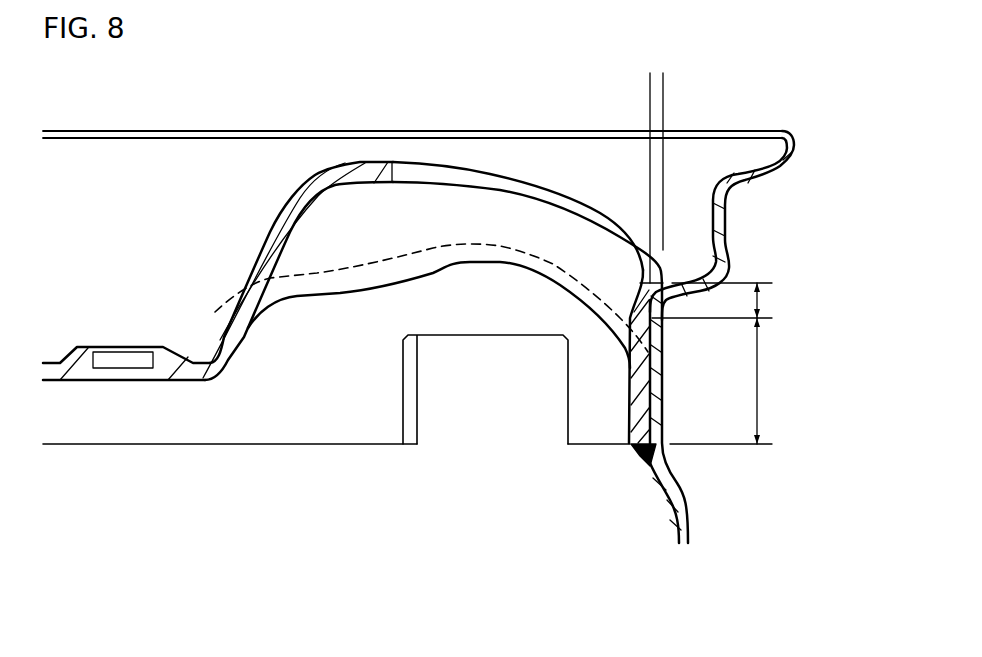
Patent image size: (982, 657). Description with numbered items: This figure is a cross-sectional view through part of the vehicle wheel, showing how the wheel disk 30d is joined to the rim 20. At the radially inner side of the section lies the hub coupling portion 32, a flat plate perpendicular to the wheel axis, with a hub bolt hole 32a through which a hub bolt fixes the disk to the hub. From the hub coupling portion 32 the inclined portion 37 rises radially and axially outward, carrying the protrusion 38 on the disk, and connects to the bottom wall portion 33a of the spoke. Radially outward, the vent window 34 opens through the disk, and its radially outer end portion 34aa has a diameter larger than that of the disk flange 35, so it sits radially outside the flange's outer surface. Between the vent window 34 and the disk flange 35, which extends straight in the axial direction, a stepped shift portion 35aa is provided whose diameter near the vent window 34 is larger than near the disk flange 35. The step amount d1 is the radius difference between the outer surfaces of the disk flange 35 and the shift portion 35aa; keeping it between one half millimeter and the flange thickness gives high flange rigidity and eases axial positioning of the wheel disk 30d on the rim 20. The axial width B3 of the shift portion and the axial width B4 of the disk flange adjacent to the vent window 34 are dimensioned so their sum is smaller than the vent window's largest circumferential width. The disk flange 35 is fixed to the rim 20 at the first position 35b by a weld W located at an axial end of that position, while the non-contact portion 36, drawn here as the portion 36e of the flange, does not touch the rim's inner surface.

The rim 20 is at (804, 155).
The wheel disk 30d is at (338, 159).
The hub coupling portion 32 is at (58, 376).
The hub bolt hole 32a is at (130, 350).
The bottom wall portion 33a is at (451, 258).
The vent window 34 is at (538, 178).
The radially outer end portion of the vent window 34aa is at (661, 274).
The disk flange 35 is at (565, 406).
The first position 35b is at (631, 444).
The shift portion 35aa is at (635, 307).
The non-contact portion 36 is at (336, 423).
The protrusion of reinforcement 36e is at (475, 338).
The inclined portion 37 is at (219, 343).
The protrusion 38 is at (280, 243).
The weld W is at (641, 458).
The step amount d1 is at (630, 83).
The axial width of the shift portion B3 is at (760, 303).
The axial width of the disk flange B4 is at (760, 371).